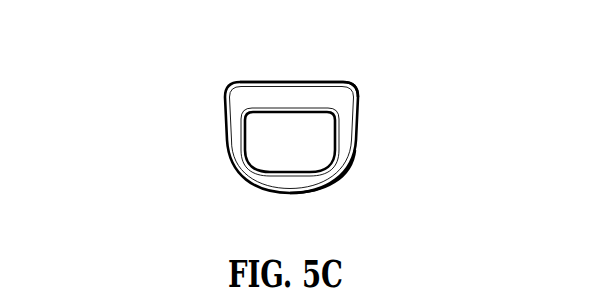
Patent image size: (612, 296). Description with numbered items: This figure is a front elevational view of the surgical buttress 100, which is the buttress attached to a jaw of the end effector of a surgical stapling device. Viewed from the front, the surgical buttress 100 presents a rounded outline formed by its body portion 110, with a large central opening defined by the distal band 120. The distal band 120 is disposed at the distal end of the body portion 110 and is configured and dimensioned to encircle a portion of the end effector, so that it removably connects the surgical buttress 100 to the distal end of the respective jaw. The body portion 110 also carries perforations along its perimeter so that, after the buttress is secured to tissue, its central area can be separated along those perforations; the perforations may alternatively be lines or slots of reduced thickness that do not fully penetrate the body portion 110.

The first surgical buttress 100 is at (186, 131).
The body portion 110 is at (300, 81).
The distal band 120 is at (346, 182).